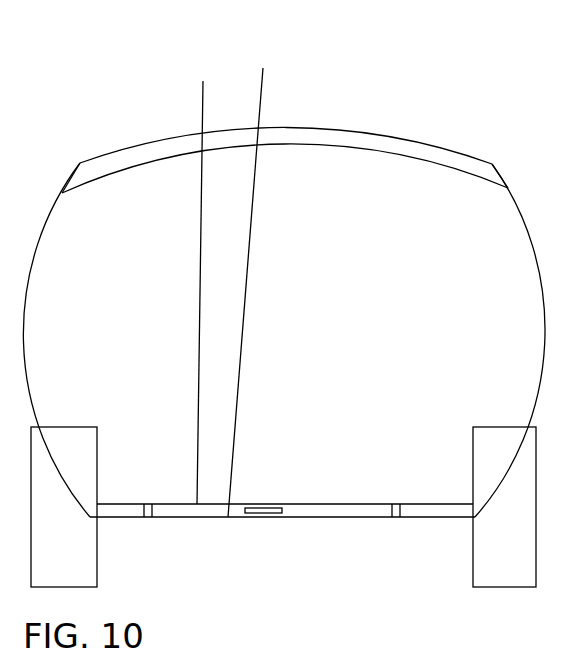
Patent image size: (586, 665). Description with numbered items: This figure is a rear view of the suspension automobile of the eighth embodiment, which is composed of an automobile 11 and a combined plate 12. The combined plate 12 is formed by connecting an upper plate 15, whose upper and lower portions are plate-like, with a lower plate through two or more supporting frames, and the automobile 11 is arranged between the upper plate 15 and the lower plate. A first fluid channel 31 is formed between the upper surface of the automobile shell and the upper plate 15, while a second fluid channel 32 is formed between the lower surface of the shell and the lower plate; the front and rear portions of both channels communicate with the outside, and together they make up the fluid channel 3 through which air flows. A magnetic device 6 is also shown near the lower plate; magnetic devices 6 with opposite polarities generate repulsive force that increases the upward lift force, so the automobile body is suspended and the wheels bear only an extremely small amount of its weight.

The upper plate 15 is at (132, 143).
The fluid channel 3 is at (316, 142).
The first fluid channel 31 is at (375, 145).
The automobile 11 is at (172, 158).
The combined plate 12 is at (237, 128).
The second fluid channel 32 is at (350, 508).
The magnetic device 6 is at (263, 512).